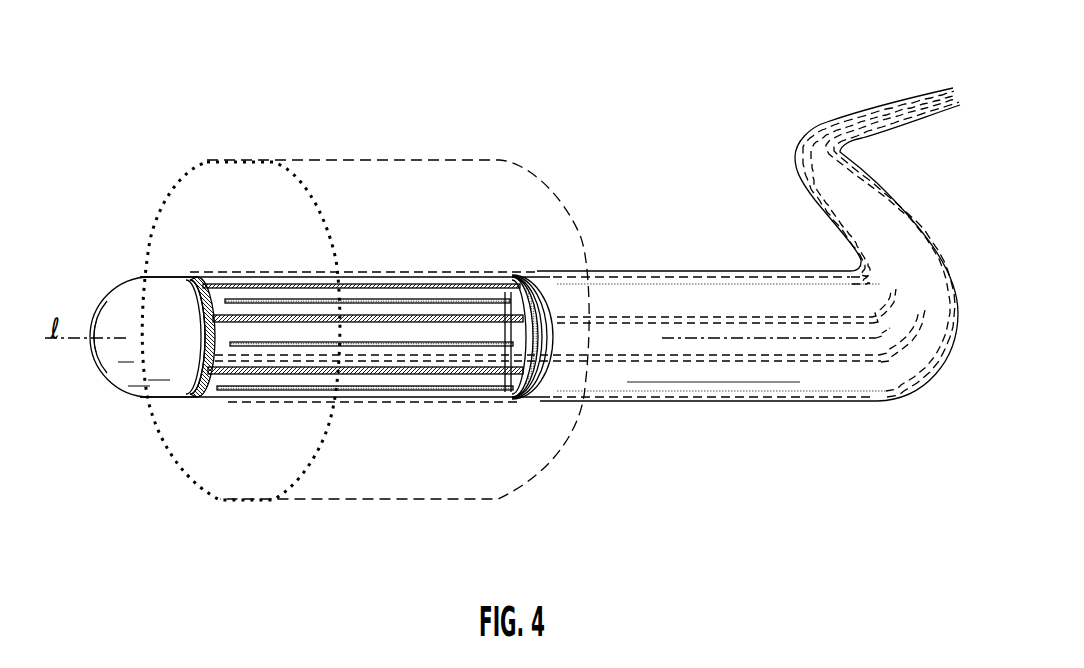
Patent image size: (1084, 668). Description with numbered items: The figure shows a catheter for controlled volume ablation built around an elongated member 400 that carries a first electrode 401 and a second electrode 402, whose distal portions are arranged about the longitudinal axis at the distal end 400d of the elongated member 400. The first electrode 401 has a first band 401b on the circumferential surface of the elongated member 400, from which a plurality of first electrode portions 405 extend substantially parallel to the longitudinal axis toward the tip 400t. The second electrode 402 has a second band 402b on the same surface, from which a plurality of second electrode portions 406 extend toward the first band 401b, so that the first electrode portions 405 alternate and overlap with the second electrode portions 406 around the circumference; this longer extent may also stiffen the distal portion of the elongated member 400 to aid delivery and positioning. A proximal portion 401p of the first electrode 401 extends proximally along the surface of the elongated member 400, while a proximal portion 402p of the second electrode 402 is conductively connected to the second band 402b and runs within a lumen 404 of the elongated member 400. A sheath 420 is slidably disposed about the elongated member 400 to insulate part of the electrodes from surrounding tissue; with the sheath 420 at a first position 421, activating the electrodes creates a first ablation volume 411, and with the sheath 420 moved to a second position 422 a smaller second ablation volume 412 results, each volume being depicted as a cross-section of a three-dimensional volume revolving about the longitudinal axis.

The elongated member 400 is at (365, 318).
The distal end 400d is at (150, 323).
The tip 400t is at (103, 343).
The first electrode 401 is at (312, 299).
The first band 401b is at (540, 276).
The proximal portion of the first electrode 401p is at (547, 272).
The second electrode 402 is at (322, 287).
The second band 402b is at (193, 293).
The proximal portion of the second electrode 402p is at (567, 357).
The lumen 404 is at (687, 297).
The first electrode portions 405 is at (405, 287).
The second electrode portions 406 is at (223, 303).
The first ablation volume 411 is at (407, 500).
The second ablation volume 412 is at (220, 500).
The sheath 420 is at (658, 280).
The first position 421 is at (522, 400).
The second position 422 is at (215, 402).